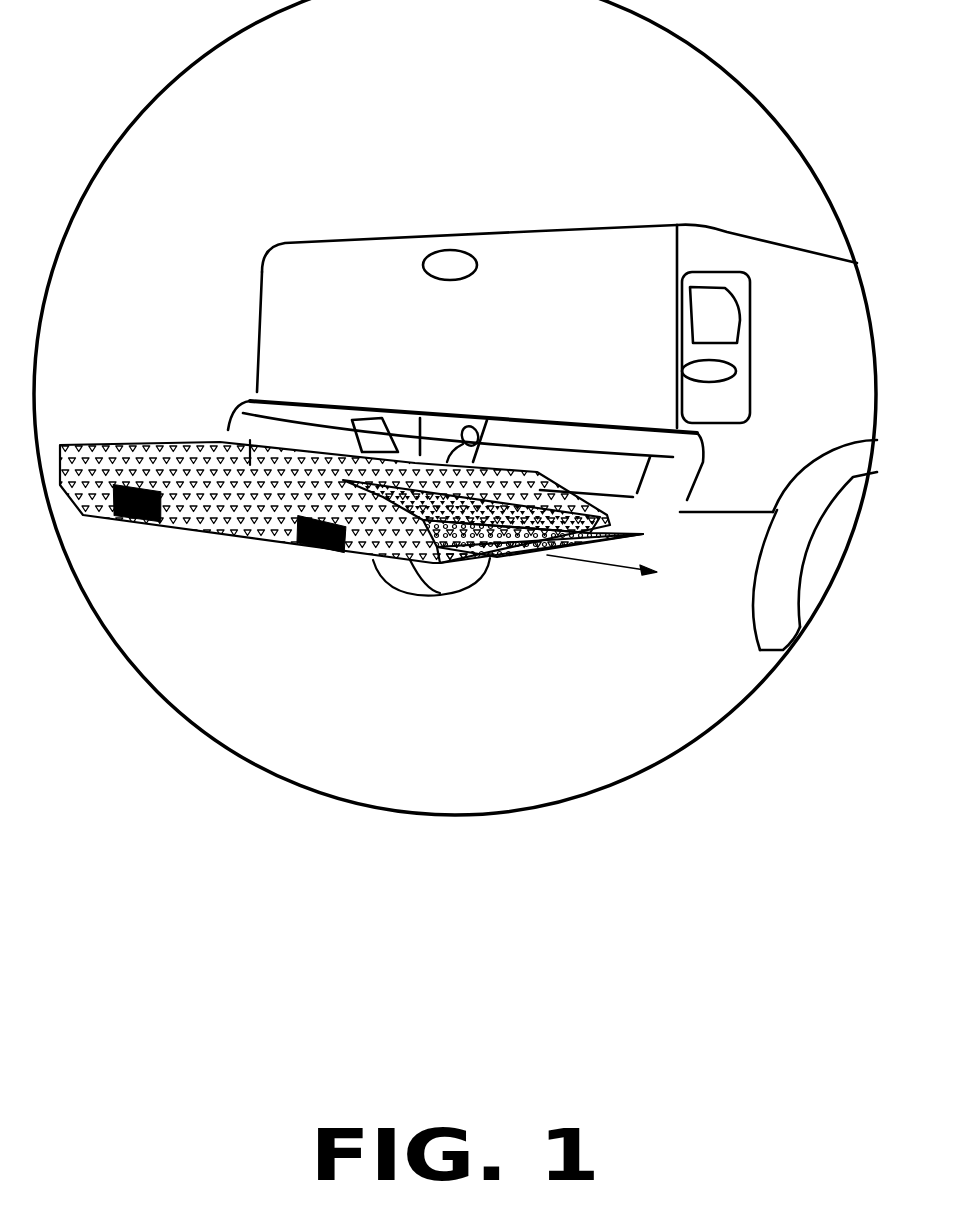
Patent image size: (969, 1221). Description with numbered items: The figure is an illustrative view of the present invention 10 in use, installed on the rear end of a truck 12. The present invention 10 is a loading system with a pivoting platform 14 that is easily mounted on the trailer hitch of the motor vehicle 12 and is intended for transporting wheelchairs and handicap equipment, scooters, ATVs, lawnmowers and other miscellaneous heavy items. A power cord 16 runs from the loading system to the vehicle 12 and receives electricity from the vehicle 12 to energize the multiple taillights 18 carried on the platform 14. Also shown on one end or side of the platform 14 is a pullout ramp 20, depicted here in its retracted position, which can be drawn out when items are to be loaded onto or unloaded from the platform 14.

The present invention 10 is at (160, 289).
The truck 12 is at (343, 255).
The pivoting platform 14 is at (200, 442).
The power cord 16 is at (428, 403).
The taillights 18 is at (155, 531).
The pullout ramp 20 is at (597, 547).